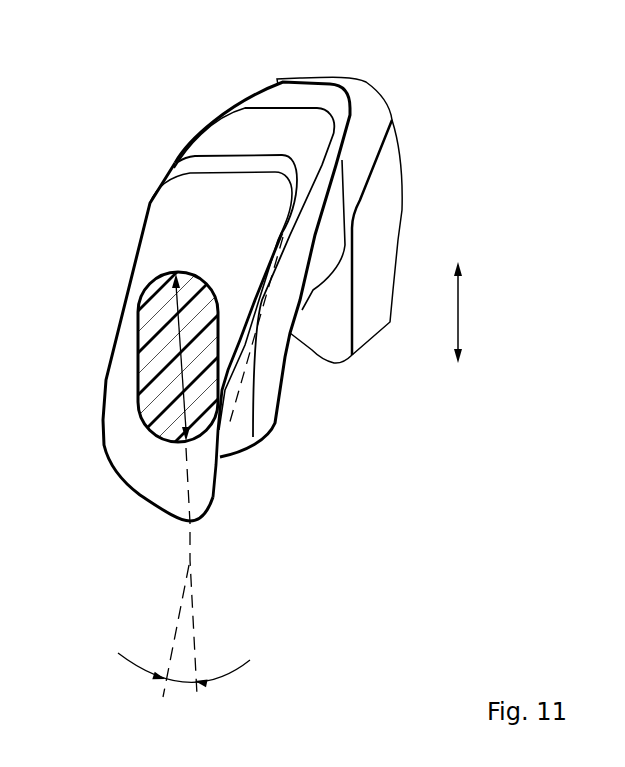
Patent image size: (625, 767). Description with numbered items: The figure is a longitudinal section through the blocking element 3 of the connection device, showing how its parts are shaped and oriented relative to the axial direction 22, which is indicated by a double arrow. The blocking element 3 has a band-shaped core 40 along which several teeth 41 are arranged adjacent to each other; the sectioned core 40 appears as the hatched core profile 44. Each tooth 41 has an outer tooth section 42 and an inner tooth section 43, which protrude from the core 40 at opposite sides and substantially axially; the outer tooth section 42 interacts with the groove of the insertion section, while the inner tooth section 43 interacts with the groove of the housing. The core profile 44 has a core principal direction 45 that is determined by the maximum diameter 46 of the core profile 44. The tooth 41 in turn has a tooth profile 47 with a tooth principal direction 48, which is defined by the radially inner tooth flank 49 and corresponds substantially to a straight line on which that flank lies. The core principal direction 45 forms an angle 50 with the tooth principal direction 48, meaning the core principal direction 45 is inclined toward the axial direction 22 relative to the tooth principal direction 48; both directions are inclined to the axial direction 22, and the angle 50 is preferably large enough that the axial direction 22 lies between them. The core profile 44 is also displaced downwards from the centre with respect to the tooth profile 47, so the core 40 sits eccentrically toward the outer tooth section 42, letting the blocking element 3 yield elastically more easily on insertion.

The blocking element 3 is at (452, 131).
The axial direction 22 is at (458, 312).
The band-shaped core 40 is at (126, 339).
The teeth 41 is at (166, 157).
The outer tooth section 42 is at (148, 477).
The inner tooth section 43 is at (230, 162).
The core profile 44 is at (137, 358).
The core principal direction 45 is at (193, 630).
The maximum diameter 46 is at (178, 338).
The tooth profile 47 is at (138, 242).
The tooth principal direction 48 is at (200, 541).
The tooth flank 49 is at (220, 457).
The angle 50 is at (178, 683).